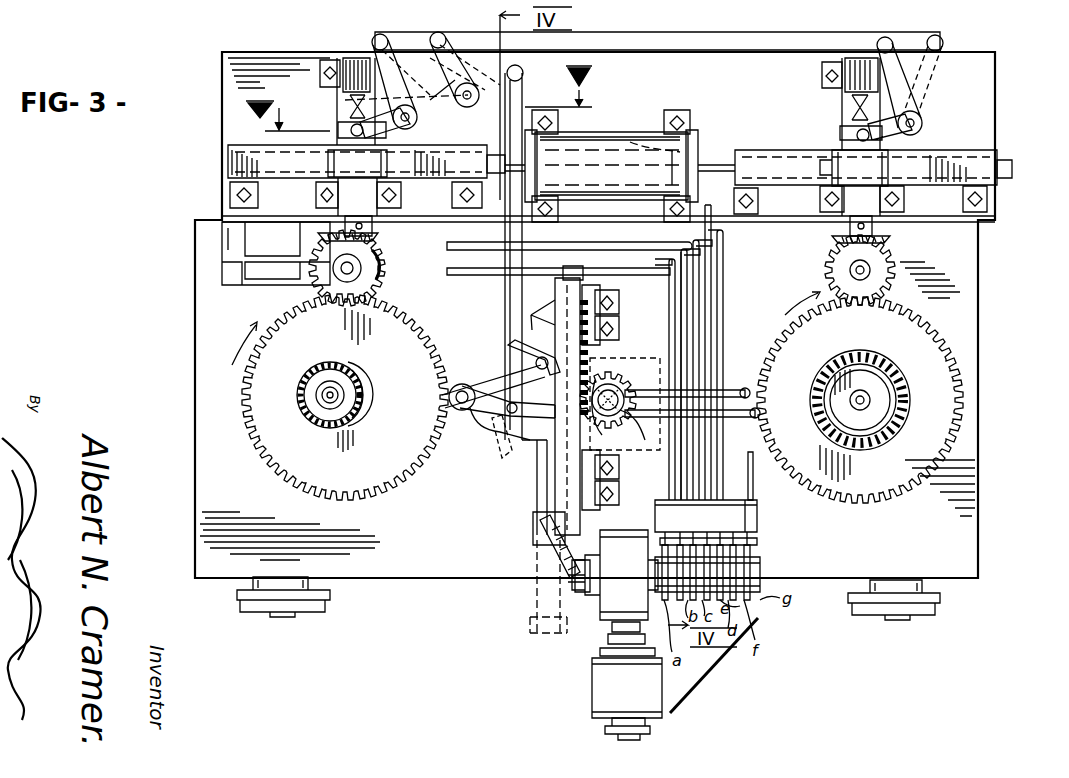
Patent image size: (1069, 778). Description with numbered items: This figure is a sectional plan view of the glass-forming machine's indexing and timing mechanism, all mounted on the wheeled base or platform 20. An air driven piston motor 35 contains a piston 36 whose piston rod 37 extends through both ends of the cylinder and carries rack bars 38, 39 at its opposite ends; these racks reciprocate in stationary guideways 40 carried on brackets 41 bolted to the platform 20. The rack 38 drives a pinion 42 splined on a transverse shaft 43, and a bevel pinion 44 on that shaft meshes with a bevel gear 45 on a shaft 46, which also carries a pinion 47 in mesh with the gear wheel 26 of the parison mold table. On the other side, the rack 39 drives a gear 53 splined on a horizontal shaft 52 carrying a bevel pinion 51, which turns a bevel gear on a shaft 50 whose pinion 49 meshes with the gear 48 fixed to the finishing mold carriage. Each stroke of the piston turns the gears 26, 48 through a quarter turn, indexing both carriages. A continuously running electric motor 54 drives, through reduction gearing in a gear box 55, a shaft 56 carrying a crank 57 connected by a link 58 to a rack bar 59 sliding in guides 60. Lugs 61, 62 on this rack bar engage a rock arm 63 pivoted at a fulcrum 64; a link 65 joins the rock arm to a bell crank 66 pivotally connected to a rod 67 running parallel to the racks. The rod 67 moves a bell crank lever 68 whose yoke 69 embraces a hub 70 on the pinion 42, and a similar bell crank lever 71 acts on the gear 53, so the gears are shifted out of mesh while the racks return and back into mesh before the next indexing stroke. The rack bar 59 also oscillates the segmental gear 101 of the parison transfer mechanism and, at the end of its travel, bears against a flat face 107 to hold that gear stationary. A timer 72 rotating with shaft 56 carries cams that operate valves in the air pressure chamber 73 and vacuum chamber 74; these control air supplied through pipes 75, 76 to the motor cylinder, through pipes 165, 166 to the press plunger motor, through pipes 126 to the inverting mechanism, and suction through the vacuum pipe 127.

The wheeled base or platform 20 is at (442, 575).
The gear wheel 26 is at (432, 344).
The air driven piston motor 35 is at (634, 140).
The piston 36 is at (630, 142).
The piston rod 37 is at (720, 165).
The rack bar 38 is at (498, 180).
The rack bar 39 is at (1014, 170).
The stationary guideways 40 is at (970, 160).
The brackets 41 is at (230, 190).
The pinion 42 is at (330, 163).
The shaft 43 is at (350, 100).
The bevel pinion 44 is at (378, 240).
The bevel gear 45 is at (384, 264).
The shaft 46 is at (340, 270).
The pinion 47 is at (385, 280).
The gear 48 is at (920, 328).
The pinion 49 is at (825, 270).
The shaft 50 is at (868, 266).
The bevel pinion 51 is at (838, 239).
The horizontal shaft 52 is at (850, 98).
The gear 53 is at (828, 158).
The electric motor 54 is at (592, 678).
The gear box 55 is at (606, 620).
The shaft 56 is at (760, 566).
The crank 57 is at (540, 548).
The link 58 is at (537, 482).
The rack bar 59 is at (565, 348).
The guides 60 is at (566, 280).
The lug 61 is at (531, 310).
The lug 62 is at (512, 350).
The rock arm 63 is at (495, 390).
The fulcrum 64 is at (462, 412).
The link 65 is at (500, 291).
The bell crank 66 is at (482, 100).
The rod 67 is at (636, 50).
The bell crank lever 68 is at (370, 42).
The yoke 69 is at (387, 150).
The hub 70 is at (338, 122).
The bell crank lever 71 is at (900, 84).
The timer 72 is at (748, 612).
The air pressure chamber 73 is at (660, 515).
The vacuum chamber 74 is at (757, 510).
The pipe 75 is at (672, 440).
The pipe 76 is at (712, 240).
The segmental gear 101 is at (628, 382).
The flat face 107 is at (612, 393).
The pipes 126 is at (745, 390).
The vacuum pipe 127 is at (753, 470).
The pipe 165 is at (700, 340).
The pipe 166 is at (480, 242).